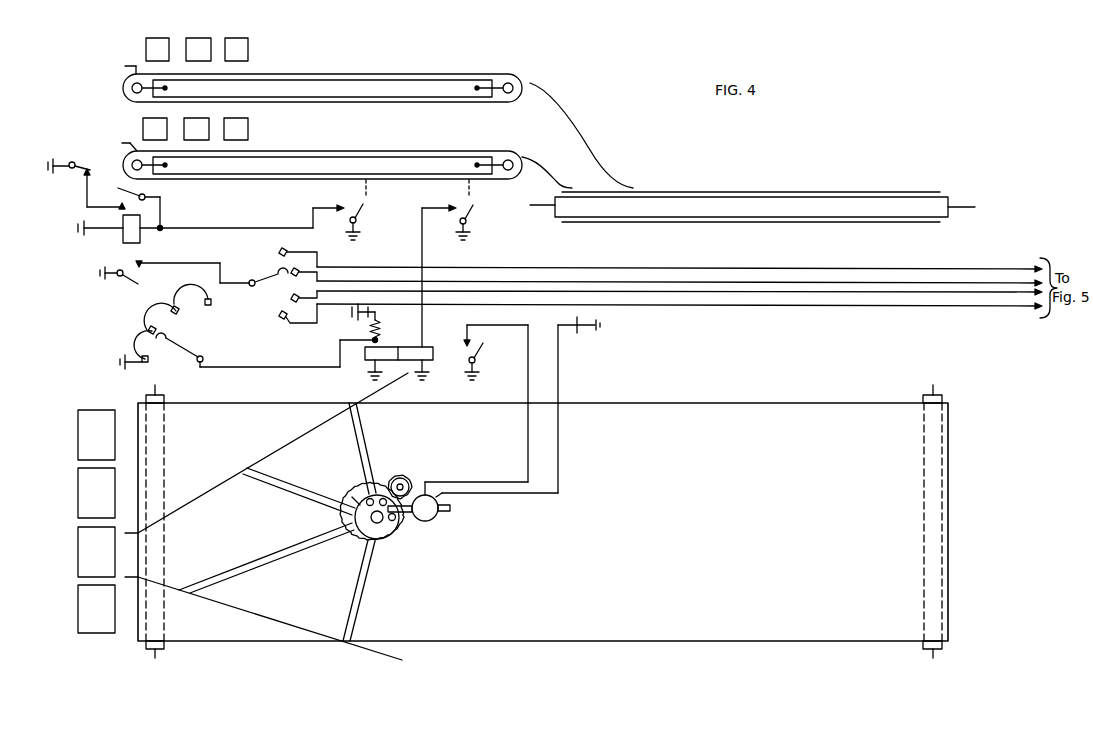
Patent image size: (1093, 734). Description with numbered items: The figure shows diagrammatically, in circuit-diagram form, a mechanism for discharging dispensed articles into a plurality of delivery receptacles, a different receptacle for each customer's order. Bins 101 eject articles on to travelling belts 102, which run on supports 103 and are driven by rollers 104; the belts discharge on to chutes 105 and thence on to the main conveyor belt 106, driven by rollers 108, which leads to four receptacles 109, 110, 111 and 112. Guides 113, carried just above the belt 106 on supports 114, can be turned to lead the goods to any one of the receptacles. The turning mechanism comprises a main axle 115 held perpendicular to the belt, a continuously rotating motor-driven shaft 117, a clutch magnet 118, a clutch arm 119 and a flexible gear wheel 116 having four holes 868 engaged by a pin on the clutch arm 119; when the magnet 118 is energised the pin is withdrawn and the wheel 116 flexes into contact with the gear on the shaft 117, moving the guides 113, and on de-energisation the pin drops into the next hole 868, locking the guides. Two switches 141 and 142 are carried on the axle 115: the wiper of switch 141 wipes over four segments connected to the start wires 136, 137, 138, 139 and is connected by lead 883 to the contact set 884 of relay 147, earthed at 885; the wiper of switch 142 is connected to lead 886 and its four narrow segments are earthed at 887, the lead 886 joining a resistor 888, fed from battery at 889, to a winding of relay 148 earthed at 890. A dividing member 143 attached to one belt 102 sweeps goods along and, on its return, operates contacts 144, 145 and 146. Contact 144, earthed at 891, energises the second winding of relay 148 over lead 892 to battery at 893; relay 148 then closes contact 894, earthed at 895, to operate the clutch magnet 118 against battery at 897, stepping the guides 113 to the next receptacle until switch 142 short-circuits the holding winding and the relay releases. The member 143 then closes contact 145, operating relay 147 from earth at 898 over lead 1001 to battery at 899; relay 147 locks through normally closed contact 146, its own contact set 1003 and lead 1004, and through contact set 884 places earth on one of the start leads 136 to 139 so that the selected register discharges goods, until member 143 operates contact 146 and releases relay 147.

The bins 101 is at (257, 50).
The travelling belts 102 is at (341, 74).
The supports 103 is at (397, 78).
The rollers 104 is at (132, 88).
The chutes 105 is at (581, 135).
The main conveyor belt 106 is at (852, 196).
The rollers 108 is at (845, 216).
The receptacle 109 is at (86, 609).
The receptacle 110 is at (86, 552).
The receptacle 111 is at (86, 493).
The receptacle 112 is at (86, 435).
The guides 113 is at (170, 515).
The supports 114 is at (304, 539).
The main axle 115 is at (383, 539).
The flexible gear wheel 116 is at (409, 516).
The continuously rotating shaft 117 is at (403, 476).
The clutch magnet 118 is at (452, 514).
The clutch arm 119 is at (411, 503).
The wire 136 is at (661, 268).
The wire 137 is at (693, 281).
The wire 138 is at (726, 290).
The wire 139 is at (756, 304).
The switch 141 is at (283, 285).
The switch 142 is at (179, 323).
The dividing member 143 is at (118, 104).
The contact 144 is at (479, 213).
The contact 145 is at (368, 213).
The contact 146 is at (86, 177).
The relay 147 is at (123, 240).
The relay 148 is at (409, 345).
The holes 868 is at (363, 494).
The lead 883 is at (192, 264).
The contact set 884 is at (143, 274).
The earth 885 is at (94, 272).
The lead 886 is at (287, 353).
The earth 887 is at (118, 362).
The resistor 888 is at (388, 331).
The battery 889 is at (349, 312).
The earth 890 is at (362, 373).
The earth 891 is at (478, 233).
The lead 892 is at (424, 276).
The battery 893 is at (436, 374).
The contact 894 is at (476, 410).
The earth 895 is at (486, 375).
The battery 897 is at (534, 407).
The earth 898 is at (368, 233).
The battery 899 is at (85, 227).
The lead 1001 is at (252, 216).
The contact set 1003 is at (125, 197).
The lead 1004 is at (178, 214).